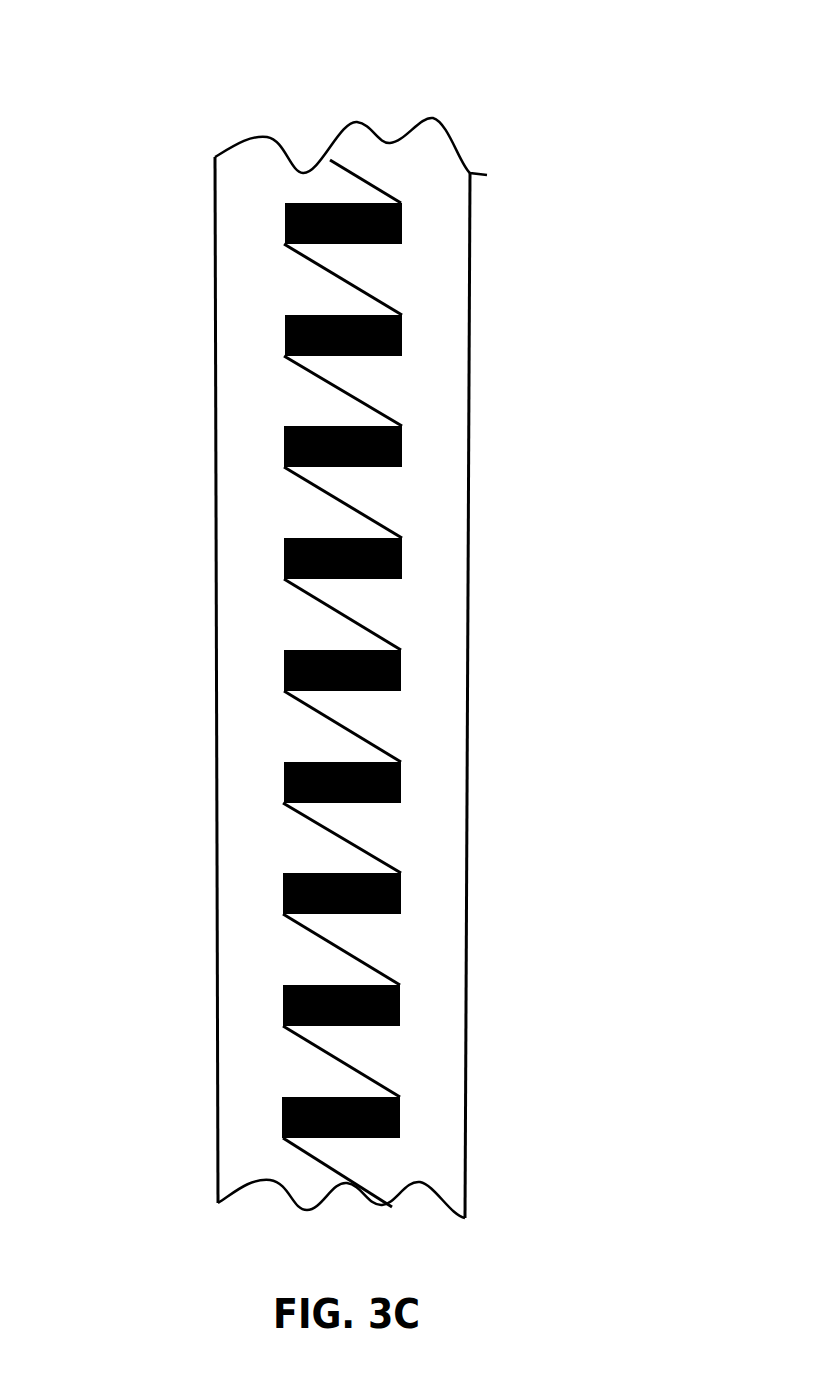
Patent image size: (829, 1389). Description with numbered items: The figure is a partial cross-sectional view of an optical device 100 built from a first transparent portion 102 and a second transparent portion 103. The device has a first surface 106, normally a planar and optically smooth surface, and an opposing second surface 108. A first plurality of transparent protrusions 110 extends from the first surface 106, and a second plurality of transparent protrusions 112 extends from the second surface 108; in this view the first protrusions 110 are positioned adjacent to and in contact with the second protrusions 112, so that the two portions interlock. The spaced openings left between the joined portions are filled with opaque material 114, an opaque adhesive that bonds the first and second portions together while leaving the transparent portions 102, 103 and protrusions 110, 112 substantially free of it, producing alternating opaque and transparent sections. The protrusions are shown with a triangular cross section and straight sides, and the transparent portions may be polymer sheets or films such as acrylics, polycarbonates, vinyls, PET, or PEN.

The optical device 100 is at (440, 114).
The first transparent portion 102 is at (452, 518).
The second transparent portion 103 is at (255, 523).
The first surface 106 is at (479, 772).
The second surface 108 is at (225, 937).
The first plurality of transparent protrusions 110 is at (381, 615).
The second plurality of transparent protrusions 112 is at (314, 625).
The opaque material 114 is at (355, 197).